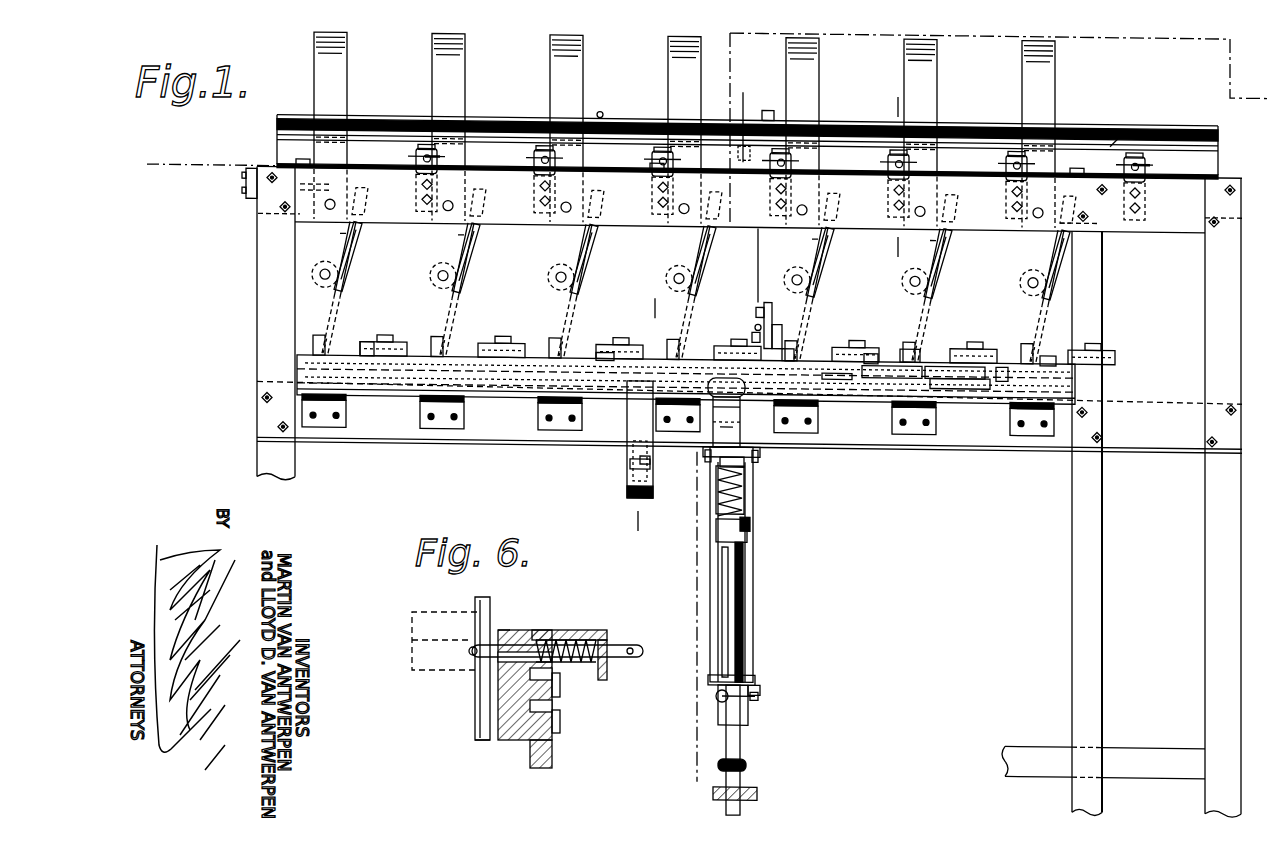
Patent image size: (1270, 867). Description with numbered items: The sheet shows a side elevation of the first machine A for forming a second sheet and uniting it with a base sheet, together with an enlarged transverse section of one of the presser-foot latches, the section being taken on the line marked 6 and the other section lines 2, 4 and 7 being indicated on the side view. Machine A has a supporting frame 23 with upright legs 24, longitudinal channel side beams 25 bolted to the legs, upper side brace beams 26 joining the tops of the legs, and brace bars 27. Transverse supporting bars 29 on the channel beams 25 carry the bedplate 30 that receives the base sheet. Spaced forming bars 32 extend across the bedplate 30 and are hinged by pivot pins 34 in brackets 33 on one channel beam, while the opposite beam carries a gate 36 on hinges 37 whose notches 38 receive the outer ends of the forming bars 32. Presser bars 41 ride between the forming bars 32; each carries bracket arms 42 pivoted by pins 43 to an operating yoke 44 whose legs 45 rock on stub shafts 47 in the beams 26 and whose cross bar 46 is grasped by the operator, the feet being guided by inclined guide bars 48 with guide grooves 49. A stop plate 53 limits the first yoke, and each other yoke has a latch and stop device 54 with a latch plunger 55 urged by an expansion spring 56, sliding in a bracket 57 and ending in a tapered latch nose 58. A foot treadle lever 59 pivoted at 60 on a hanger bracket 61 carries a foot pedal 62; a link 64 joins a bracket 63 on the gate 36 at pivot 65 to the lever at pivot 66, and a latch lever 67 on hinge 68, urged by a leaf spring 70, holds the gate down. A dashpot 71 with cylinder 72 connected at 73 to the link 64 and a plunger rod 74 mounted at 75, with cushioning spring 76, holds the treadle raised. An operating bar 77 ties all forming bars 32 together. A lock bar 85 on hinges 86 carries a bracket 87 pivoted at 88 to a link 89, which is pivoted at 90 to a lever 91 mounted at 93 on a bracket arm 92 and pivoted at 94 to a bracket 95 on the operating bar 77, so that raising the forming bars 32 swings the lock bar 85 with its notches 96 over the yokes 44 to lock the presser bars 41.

In FIG. 1, the section line 2- 2 is at (157, 130).
In FIG. 1, the section line 4- 4 is at (705, 68).
In FIG. 1, the section line 6- 6 is at (894, 103).
In FIG. 1, the section line 7- 7 is at (626, 307).
In FIG. 1, the machine A is at (1092, 144).
In FIG. 6, the machine A is at (498, 626).
In FIG. 1, the supporting frame 23 is at (1168, 408).
In FIG. 1, the upright supporting legs 24 is at (298, 458).
In FIG. 1, the side beams 25 is at (950, 448).
In FIG. 1, the side brace beams 26 is at (1163, 221).
In FIG. 6, the side brace beams 26 is at (530, 762).
In FIG. 1, the brace bars 27 is at (1125, 744).
In FIG. 1, the supporting bars 29 is at (948, 375).
In FIG. 1, the bedplate 30 is at (927, 355).
In FIG. 1, the forming bars 32 is at (400, 356).
In FIG. 1, the brackets 33 is at (872, 396).
In FIG. 1, the pivot pins 34 is at (1001, 375).
In FIG. 1, the gate 36 is at (390, 384).
In FIG. 1, the hinges 37 is at (464, 420).
In FIG. 1, the notches 38 is at (618, 358).
In FIG. 1, the presser bars 41 is at (596, 358).
In FIG. 1, the bracket arms 42 is at (420, 294).
In FIG. 1, the pivot pins 43 is at (430, 276).
In FIG. 1, the operating yoke 44 is at (580, 102).
In FIG. 6, the operating yoke 44 is at (468, 600).
In FIG. 1, the legs 45 is at (446, 110).
In FIG. 6, the legs 45 is at (478, 700).
In FIG. 1, the cross bar 46 is at (548, 41).
In FIG. 6, the cross bar 46 is at (440, 670).
In FIG. 1, the stub shafts 47 is at (428, 208).
In FIG. 1, the guide bars 48 is at (486, 232).
In FIG. 1, the guide grooves 49 is at (466, 248).
In FIG. 1, the stop plate 53 is at (258, 203).
In FIG. 1, the latch and stop device 54 is at (412, 156).
In FIG. 6, the latch and stop device 54 is at (608, 632).
In FIG. 1, the latch plunger 55 is at (536, 158).
In FIG. 6, the latch plunger 55 is at (630, 660).
In FIG. 6, the expansion spring 56 is at (570, 664).
In FIG. 1, the brackets 57 is at (560, 155).
In FIG. 6, the brackets 57 is at (502, 668).
In FIG. 6, the tapered latch nose 58 is at (472, 652).
In FIG. 1, the foot treadle lever 59 is at (749, 735).
In FIG. 1, the pivot 60 is at (716, 694).
In FIG. 1, the hanger bracket 61 is at (716, 500).
In FIG. 1, the foot pedal 62 is at (761, 784).
In FIG. 1, the bracket 63 is at (733, 418).
In FIG. 1, the link 64 is at (733, 427).
In FIG. 1, the pivot 65 is at (736, 407).
In FIG. 1, the pivot 66 is at (751, 762).
In FIG. 1, the latch lever 67 is at (628, 420).
In FIG. 1, the hinge 68 is at (652, 464).
In FIG. 1, the leaf spring 70 is at (628, 466).
In FIG. 1, the dashpot 71 is at (754, 532).
In FIG. 1, the cylinder 72 is at (754, 571).
In FIG. 1, the pivot 73 is at (754, 676).
In FIG. 1, the plunger rod 74 is at (752, 472).
In FIG. 1, the pivot 75 is at (756, 458).
In FIG. 1, the cushioning spring 76 is at (746, 496).
In FIG. 1, the operating bar 77 is at (378, 346).
In FIG. 1, the lock bar 85 is at (824, 118).
In FIG. 1, the hinges 86 is at (306, 160).
In FIG. 1, the bracket 87 is at (742, 96).
In FIG. 1, the pivot 88 is at (738, 150).
In FIG. 1, the link 89 is at (757, 254).
In FIG. 1, the pivot 90 is at (755, 312).
In FIG. 1, the lever 91 is at (772, 302).
In FIG. 1, the bracket arm 92 is at (777, 326).
In FIG. 1, the pivot 93 is at (755, 325).
In FIG. 1, the pivot 94 is at (752, 334).
In FIG. 1, the bracket 95 is at (790, 349).
In FIG. 1, the notches 96 is at (600, 106).